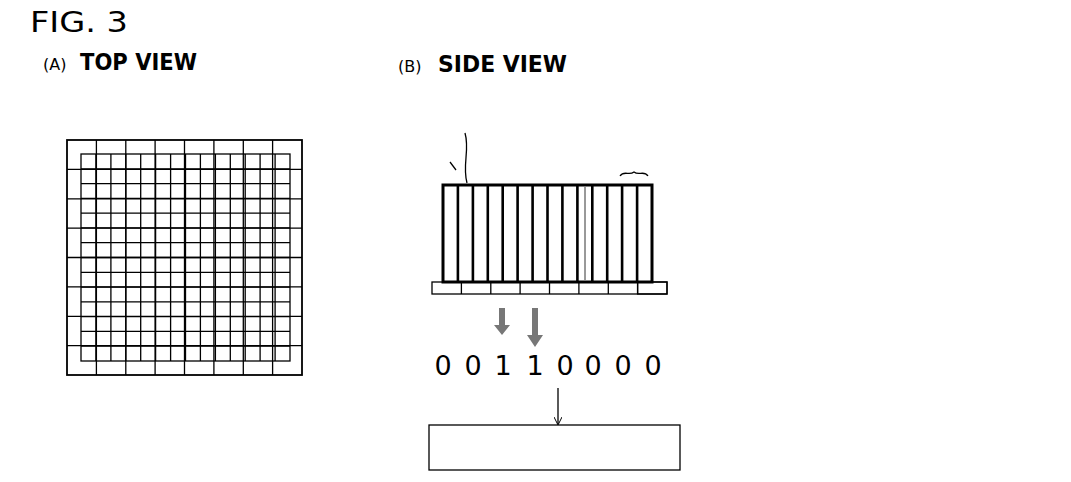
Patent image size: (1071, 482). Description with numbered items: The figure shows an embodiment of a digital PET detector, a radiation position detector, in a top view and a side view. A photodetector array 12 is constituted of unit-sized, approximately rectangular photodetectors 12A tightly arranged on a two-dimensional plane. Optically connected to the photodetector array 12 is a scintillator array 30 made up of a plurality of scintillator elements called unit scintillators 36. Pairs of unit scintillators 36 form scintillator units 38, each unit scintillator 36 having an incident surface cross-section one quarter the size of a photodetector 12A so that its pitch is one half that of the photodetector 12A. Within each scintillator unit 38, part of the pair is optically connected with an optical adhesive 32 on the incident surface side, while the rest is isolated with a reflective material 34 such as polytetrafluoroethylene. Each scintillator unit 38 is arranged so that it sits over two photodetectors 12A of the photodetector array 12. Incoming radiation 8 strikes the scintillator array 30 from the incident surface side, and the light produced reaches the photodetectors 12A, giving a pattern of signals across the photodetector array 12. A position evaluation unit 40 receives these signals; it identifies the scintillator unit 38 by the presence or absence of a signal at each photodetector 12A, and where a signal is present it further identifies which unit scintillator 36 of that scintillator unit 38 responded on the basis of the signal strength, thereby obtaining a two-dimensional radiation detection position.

The radiation 8 is at (455, 141).
The photodetector array 12 is at (506, 257).
The photodetector 12A is at (645, 292).
The scintillator array 30 is at (513, 234).
The optical adhesive 32 is at (587, 226).
The reflective material 34 is at (590, 228).
The unit scintillator 36 is at (653, 208).
The scintillator unit 38 is at (634, 170).
The position evaluation unit 40 is at (680, 447).